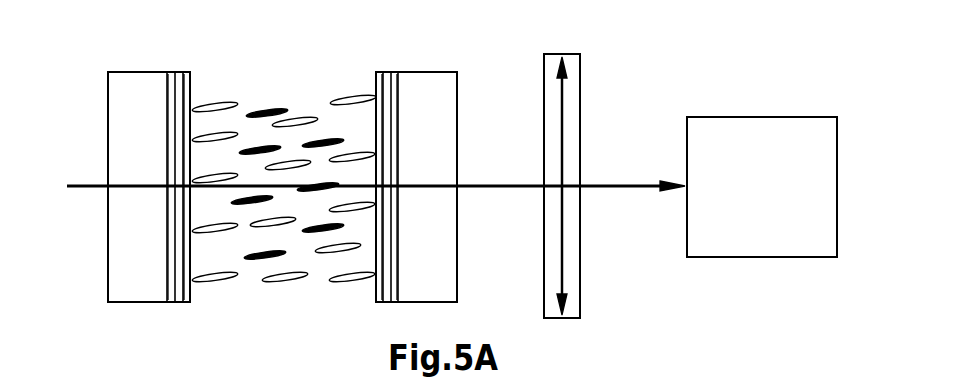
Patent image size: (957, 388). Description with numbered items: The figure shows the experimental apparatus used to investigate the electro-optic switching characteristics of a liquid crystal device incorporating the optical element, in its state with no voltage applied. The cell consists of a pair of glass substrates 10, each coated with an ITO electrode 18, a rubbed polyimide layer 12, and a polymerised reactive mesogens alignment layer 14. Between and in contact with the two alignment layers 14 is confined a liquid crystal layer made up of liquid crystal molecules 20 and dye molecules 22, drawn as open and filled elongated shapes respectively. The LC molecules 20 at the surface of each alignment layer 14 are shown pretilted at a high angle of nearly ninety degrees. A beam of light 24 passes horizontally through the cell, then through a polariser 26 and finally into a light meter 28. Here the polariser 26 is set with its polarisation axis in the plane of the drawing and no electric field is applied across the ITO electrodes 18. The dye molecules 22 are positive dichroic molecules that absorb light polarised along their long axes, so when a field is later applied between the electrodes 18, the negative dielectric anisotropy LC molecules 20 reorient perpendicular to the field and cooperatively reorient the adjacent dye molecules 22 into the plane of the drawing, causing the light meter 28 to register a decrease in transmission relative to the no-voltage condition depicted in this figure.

The glass substrate 10 is at (120, 77).
The rubbed polyimide layer 12 is at (180, 72).
The polymerised reactive mesogens alignment layer 14 is at (185, 303).
The ITO electrode 18 is at (172, 303).
The liquid crystal molecule 20 is at (352, 96).
The dye molecule 22 is at (273, 110).
The beam of light 24 is at (92, 185).
The polariser 26 is at (570, 115).
The light meter 28 is at (778, 128).